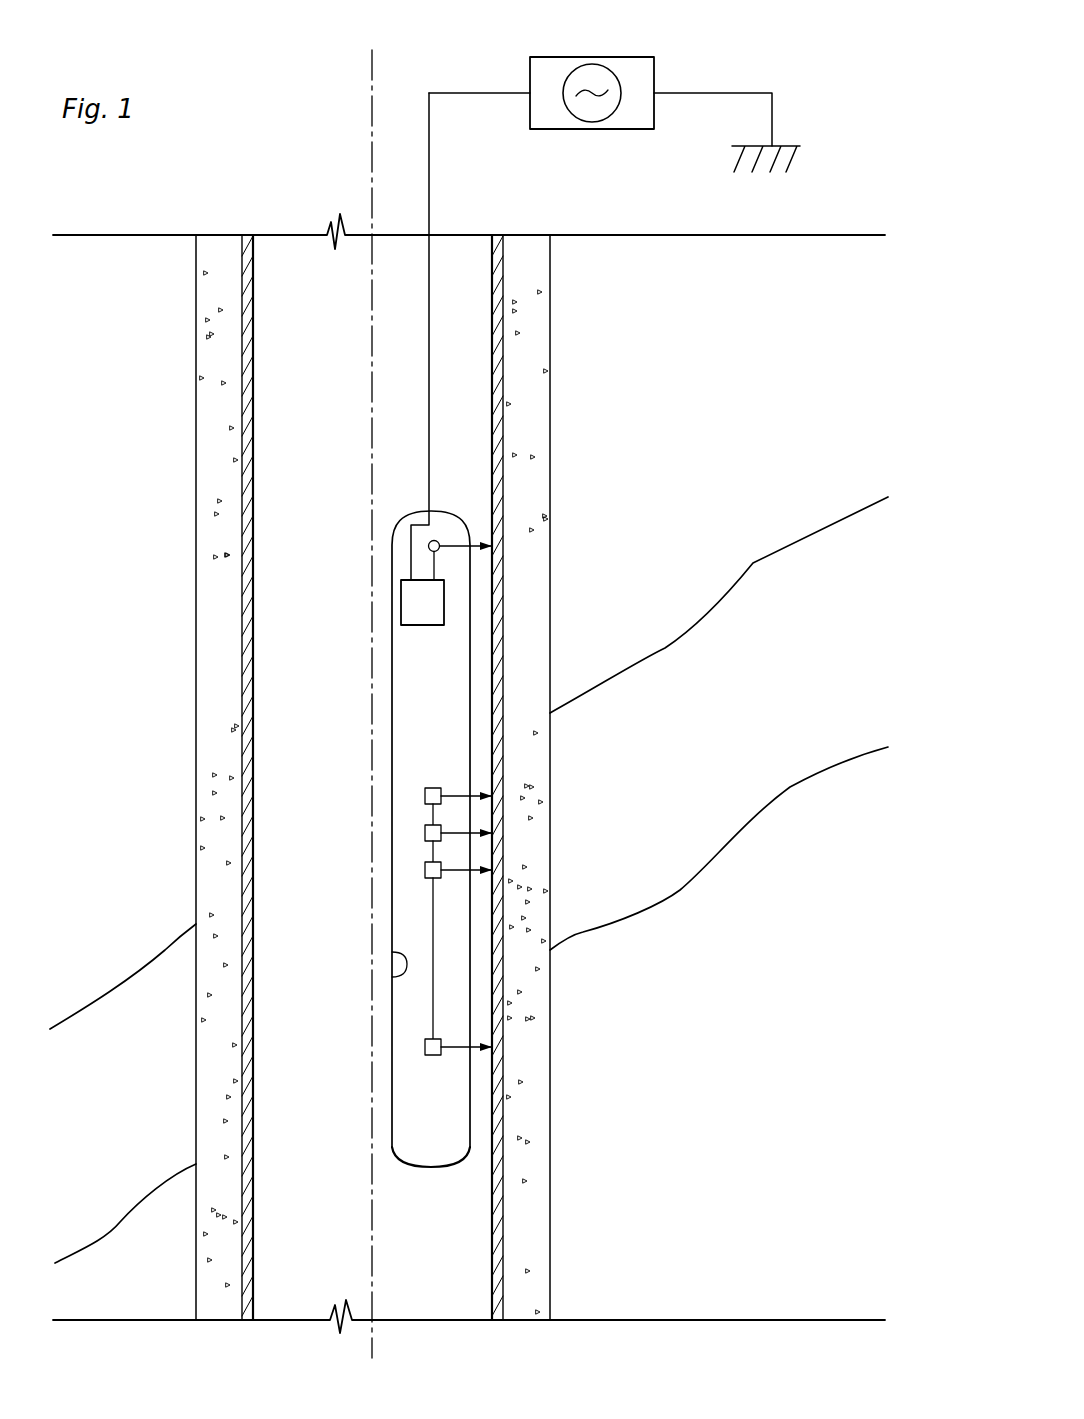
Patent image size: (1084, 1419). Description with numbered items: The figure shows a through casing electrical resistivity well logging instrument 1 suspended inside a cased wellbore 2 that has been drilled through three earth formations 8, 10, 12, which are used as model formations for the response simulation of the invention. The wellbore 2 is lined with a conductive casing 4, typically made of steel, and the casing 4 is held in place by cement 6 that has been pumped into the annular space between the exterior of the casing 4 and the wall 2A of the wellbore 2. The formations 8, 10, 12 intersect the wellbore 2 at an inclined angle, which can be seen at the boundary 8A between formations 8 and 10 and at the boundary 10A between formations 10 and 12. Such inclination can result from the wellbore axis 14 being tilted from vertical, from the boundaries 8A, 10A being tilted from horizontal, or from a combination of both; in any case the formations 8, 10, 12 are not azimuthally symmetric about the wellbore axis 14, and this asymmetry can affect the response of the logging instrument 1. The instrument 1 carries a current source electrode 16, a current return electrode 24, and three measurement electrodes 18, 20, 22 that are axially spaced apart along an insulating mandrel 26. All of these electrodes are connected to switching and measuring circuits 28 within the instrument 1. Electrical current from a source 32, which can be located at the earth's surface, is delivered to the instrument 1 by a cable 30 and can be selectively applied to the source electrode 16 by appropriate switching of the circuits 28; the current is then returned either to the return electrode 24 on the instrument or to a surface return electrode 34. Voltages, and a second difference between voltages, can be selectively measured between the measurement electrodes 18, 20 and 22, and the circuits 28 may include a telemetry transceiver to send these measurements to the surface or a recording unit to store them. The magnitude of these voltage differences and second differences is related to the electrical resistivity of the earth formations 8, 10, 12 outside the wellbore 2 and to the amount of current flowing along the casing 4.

The through casing electrical resistivity instrument 1 is at (400, 1185).
The wellbore 2 is at (275, 392).
The wall of the wellbore 2A is at (196, 305).
The conductive casing 4 is at (242, 465).
The cement 6 is at (210, 540).
The earth formation 8 is at (128, 733).
The boundary 8A is at (138, 972).
The earth formation 10 is at (142, 1111).
The boundary 10A is at (122, 1226).
The earth formation 12 is at (144, 1295).
The wellbore axis 14 is at (372, 113).
The current source electrode 16 is at (428, 546).
The measurement electrode 18 is at (425, 795).
The measurement electrode 20 is at (425, 832).
The measurement electrode 22 is at (425, 869).
The current return electrode 24 is at (425, 1046).
The insulating mandrel 26 is at (392, 953).
The switching and measuring circuits 28 is at (409, 597).
The wireline cable 30 is at (429, 361).
The source 32 is at (634, 57).
The surface return electrode 34 is at (786, 146).